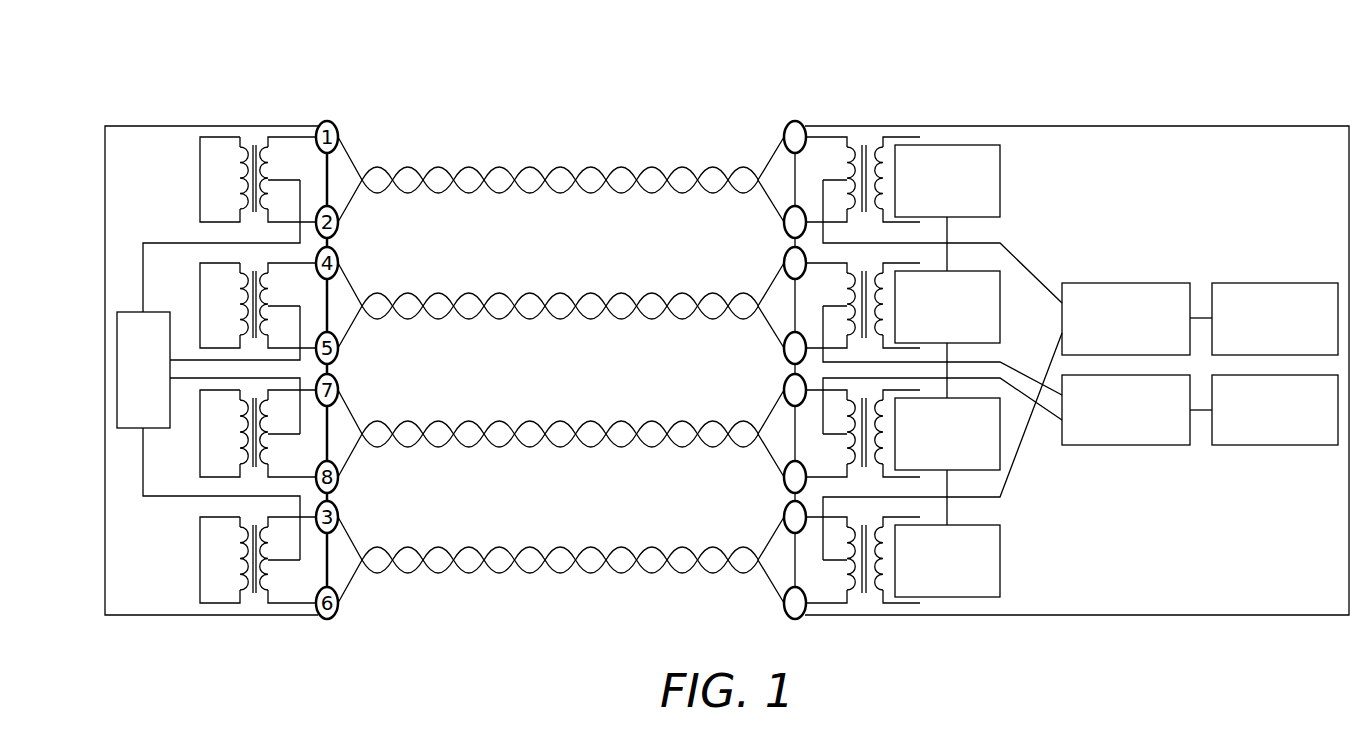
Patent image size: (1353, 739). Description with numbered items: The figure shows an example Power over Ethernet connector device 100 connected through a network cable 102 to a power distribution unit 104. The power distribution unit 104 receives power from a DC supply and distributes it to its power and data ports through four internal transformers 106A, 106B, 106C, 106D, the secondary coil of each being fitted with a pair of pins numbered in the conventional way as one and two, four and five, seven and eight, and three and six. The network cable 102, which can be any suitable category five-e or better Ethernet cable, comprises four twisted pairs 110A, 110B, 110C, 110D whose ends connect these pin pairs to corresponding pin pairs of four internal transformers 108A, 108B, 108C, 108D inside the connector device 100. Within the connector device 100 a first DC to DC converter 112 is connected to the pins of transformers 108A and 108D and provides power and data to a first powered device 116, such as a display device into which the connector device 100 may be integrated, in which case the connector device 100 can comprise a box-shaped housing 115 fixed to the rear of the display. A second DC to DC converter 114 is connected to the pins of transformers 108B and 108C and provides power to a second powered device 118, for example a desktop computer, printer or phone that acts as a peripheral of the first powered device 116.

The PoE connector device 100 is at (1016, 352).
The network cable 102 is at (561, 350).
The power distribution unit 104 is at (145, 88).
The internal transformer 106A is at (262, 137).
The internal transformer 106B is at (277, 293).
The internal transformer 106C is at (277, 443).
The internal transformer 106D is at (264, 598).
The internal transformer 108A is at (855, 152).
The internal transformer 108B is at (845, 293).
The internal transformer 108C is at (845, 443).
The internal transformer 108D is at (857, 598).
The twisted pair 110A is at (562, 194).
The twisted pair 110B is at (562, 320).
The twisted pair 110C is at (562, 447).
The twisted pair 110D is at (562, 573).
The first DC to DC converter 112 is at (1155, 283).
The second DC to DC converter 114 is at (1156, 445).
The box-shaped housing 115 is at (1318, 617).
The first powered device 116 is at (1307, 283).
The second powered device 118 is at (1308, 445).